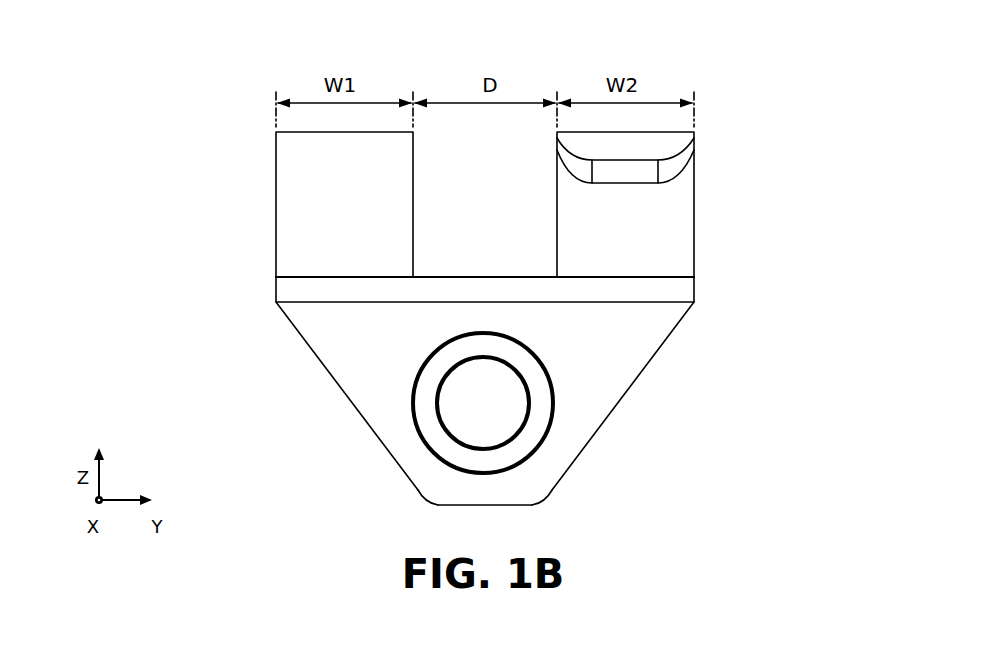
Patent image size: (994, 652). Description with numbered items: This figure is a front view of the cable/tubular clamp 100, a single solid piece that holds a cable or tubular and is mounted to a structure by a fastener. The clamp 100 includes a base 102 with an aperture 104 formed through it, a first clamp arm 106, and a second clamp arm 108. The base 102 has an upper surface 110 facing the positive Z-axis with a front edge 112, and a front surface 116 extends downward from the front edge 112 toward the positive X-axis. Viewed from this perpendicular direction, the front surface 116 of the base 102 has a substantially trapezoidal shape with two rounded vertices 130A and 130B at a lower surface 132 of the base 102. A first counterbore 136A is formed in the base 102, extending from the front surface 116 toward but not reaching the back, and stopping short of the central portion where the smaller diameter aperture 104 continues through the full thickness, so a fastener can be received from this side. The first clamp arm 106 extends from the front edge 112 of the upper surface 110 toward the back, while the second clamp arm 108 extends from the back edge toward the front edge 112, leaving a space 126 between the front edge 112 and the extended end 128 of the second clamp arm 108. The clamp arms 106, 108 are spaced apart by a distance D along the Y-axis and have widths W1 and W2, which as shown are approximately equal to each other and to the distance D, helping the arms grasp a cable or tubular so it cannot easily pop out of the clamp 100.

The cable/tubular clamp 100 is at (209, 93).
The base 102 is at (321, 368).
The aperture 104 is at (437, 422).
The first clamp arm 106 is at (320, 198).
The second clamp arm 108 is at (665, 205).
The upper surface 110 is at (461, 275).
The front edge 112 is at (520, 278).
The front surface 116 is at (355, 329).
The space 126 is at (633, 223).
The extended end 128 is at (642, 168).
The rounded vertex 130A is at (422, 500).
The rounded vertex 130B is at (548, 503).
The lower surface 132 is at (477, 508).
The first counterbore 136A is at (547, 440).